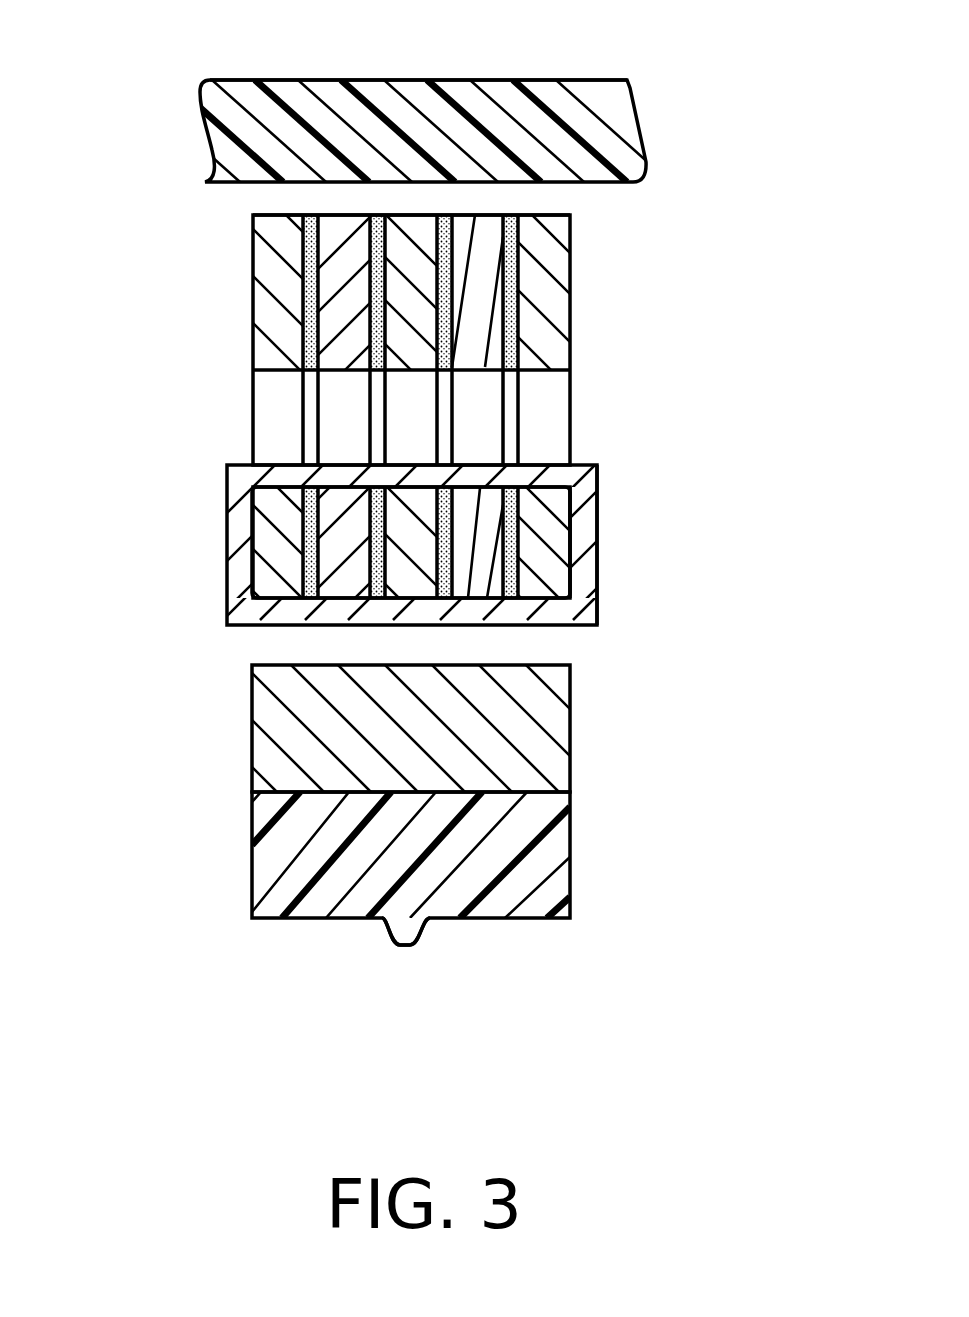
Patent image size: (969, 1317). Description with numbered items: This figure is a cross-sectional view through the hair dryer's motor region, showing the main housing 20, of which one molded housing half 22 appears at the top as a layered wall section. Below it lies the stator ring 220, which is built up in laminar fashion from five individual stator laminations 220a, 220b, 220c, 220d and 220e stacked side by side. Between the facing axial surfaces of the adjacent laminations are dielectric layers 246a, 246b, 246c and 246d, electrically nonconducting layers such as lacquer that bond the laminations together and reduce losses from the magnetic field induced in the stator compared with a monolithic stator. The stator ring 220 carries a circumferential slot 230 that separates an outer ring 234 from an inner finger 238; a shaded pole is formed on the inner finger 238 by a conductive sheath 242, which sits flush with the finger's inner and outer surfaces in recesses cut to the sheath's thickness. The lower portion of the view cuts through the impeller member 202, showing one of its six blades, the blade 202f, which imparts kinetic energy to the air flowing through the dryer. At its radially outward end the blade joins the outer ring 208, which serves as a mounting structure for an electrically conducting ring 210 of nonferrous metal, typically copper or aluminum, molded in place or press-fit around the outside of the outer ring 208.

The main housing 20 is at (395, 91).
The housing half 22 is at (601, 82).
The stator ring 220 is at (129, 212).
The stator lamination 220a is at (272, 264).
The stator lamination 220b is at (342, 308).
The stator lamination 220c is at (412, 228).
The stator lamination 220d is at (484, 272).
The stator lamination 220e is at (561, 316).
The outer ring 234 is at (571, 228).
The dielectric layer 246a is at (312, 375).
The dielectric layer 246b is at (382, 374).
The dielectric layer 246c is at (449, 372).
The dielectric layer 246d is at (514, 355).
The circumferential slot 230 is at (558, 455).
The inner finger 238 is at (564, 528).
The conductive sheath 242 is at (591, 575).
The impeller member 202 is at (241, 660).
The electrically conducting ring 210 is at (561, 738).
The outer ring 208 is at (564, 849).
The blade 202f is at (405, 946).